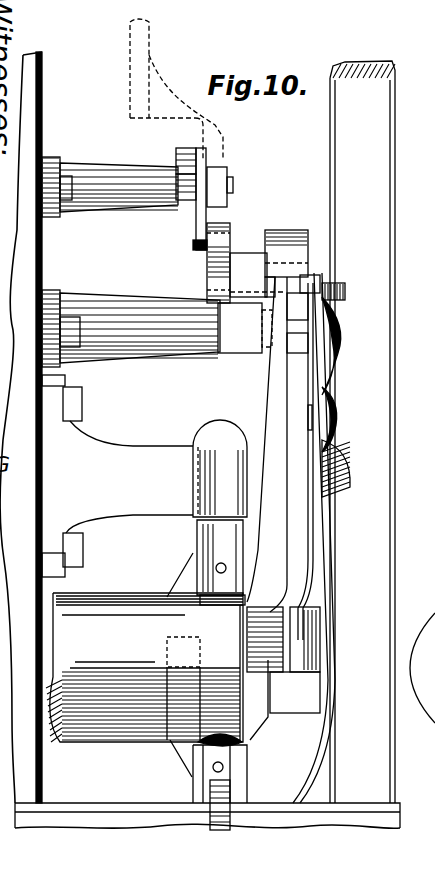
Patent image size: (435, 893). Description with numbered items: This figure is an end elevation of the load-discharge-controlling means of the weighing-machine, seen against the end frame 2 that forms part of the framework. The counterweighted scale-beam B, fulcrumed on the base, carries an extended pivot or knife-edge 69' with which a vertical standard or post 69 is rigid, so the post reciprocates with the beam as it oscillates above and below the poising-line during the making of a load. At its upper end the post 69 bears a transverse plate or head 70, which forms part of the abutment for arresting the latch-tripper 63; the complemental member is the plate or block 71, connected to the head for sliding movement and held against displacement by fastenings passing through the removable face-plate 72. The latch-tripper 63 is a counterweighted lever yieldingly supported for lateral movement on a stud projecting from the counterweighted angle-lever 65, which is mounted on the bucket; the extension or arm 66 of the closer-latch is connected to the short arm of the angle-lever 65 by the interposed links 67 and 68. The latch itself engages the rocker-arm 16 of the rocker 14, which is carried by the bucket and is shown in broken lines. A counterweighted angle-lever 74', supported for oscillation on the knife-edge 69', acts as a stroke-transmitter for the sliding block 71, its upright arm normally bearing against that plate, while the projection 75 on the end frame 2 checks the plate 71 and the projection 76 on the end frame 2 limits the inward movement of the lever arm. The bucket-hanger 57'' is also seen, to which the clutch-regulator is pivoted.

The end frame 2 is at (380, 171).
The rocker 14 is at (128, 46).
The rocker-arm 16 is at (223, 139).
The latch-tripper 63 is at (290, 230).
The counterweighted angle-lever 65 is at (227, 358).
The extension or arm 66 is at (182, 151).
The link 67 is at (200, 210).
The link 68 is at (228, 225).
The vertical standard or post 69 is at (318, 461).
The extended pivot or knife-edge 69' is at (262, 673).
The transverse plate or head 70 is at (273, 285).
The plate or block 71 is at (302, 283).
The removable face-plate 72 is at (307, 340).
The counterweighted angle-lever 74' is at (347, 468).
The projection 75 is at (326, 297).
The projection 76 is at (332, 412).
The bucket-hanger 57'' is at (144, 490).
The scale-beam B is at (144, 665).